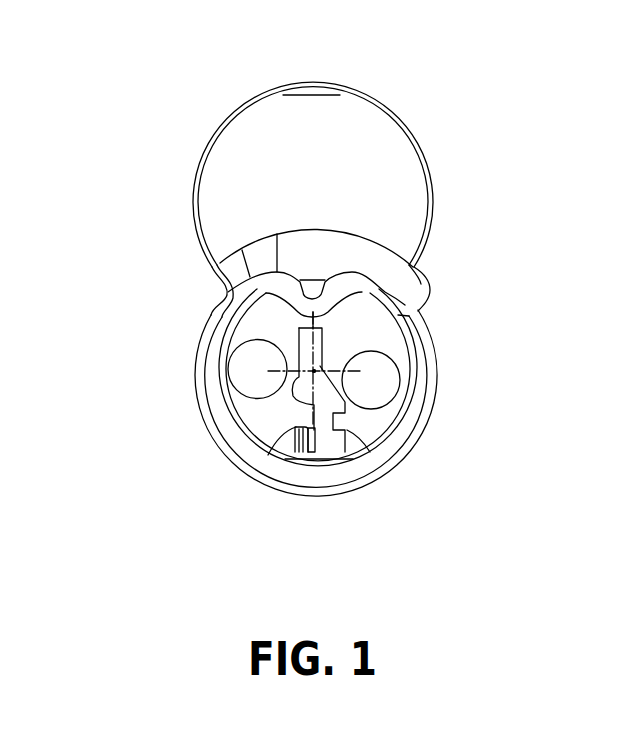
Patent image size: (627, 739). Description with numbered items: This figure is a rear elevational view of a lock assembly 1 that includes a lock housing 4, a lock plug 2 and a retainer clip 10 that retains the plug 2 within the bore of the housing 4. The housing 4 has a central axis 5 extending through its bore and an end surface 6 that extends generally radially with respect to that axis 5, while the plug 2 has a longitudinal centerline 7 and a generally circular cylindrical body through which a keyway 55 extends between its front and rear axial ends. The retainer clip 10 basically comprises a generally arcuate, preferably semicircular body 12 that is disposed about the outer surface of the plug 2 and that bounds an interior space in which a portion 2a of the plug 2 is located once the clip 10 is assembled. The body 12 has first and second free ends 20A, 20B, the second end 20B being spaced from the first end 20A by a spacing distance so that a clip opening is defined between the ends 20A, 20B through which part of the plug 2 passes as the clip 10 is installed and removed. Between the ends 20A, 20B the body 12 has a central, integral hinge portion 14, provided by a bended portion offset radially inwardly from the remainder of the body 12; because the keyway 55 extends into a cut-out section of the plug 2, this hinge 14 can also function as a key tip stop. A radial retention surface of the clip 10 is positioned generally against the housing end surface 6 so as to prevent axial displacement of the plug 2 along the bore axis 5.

The lock assembly 1 is at (150, 191).
The lock plug 2 is at (376, 421).
The portion of the plug 2a is at (266, 325).
The lock housing 4 is at (437, 192).
The central axis 5 is at (316, 371).
The end surface 6 is at (250, 460).
The longitudinal centerline 7 is at (404, 358).
The retainer clip 10 is at (191, 349).
The arcuate body 12 is at (404, 288).
The hinge portion 14 is at (297, 290).
The first free end 20A is at (231, 434).
The second free end 20B is at (398, 315).
The keyway 55 is at (325, 452).